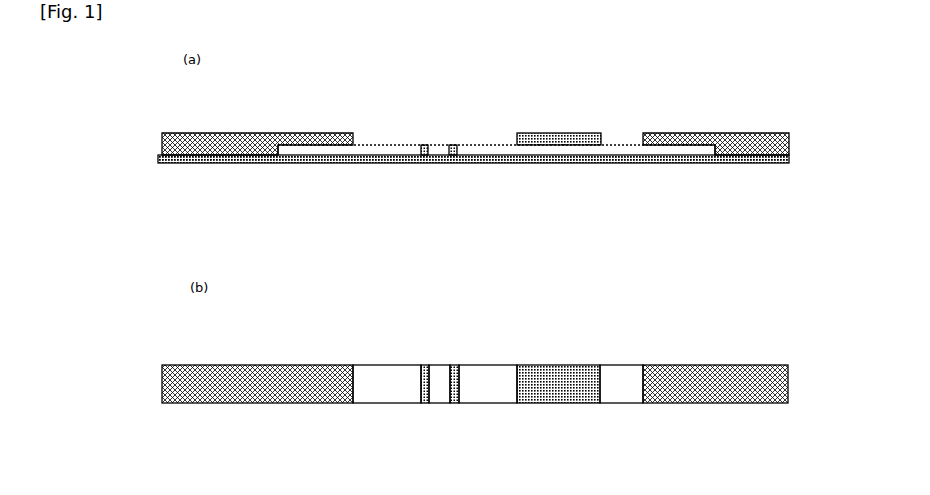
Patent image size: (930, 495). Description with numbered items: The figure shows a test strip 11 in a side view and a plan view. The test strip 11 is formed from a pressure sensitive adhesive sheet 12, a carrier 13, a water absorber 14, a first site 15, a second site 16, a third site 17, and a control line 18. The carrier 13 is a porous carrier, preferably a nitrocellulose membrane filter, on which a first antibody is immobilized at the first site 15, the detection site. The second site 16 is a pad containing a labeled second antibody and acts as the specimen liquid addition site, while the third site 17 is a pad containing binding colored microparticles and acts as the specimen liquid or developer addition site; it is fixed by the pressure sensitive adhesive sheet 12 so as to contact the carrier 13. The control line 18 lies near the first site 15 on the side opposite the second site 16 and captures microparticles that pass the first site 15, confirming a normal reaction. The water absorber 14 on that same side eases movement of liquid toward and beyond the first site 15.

The test strip 11 is at (422, 269).
The pressure sensitive adhesive sheet 12 is at (282, 161).
The carrier 13 is at (346, 155).
The water absorber 14 is at (229, 141).
The first site 15 is at (449, 137).
The second site 16 is at (546, 126).
The third site 17 is at (726, 131).
The control line 18 is at (419, 138).